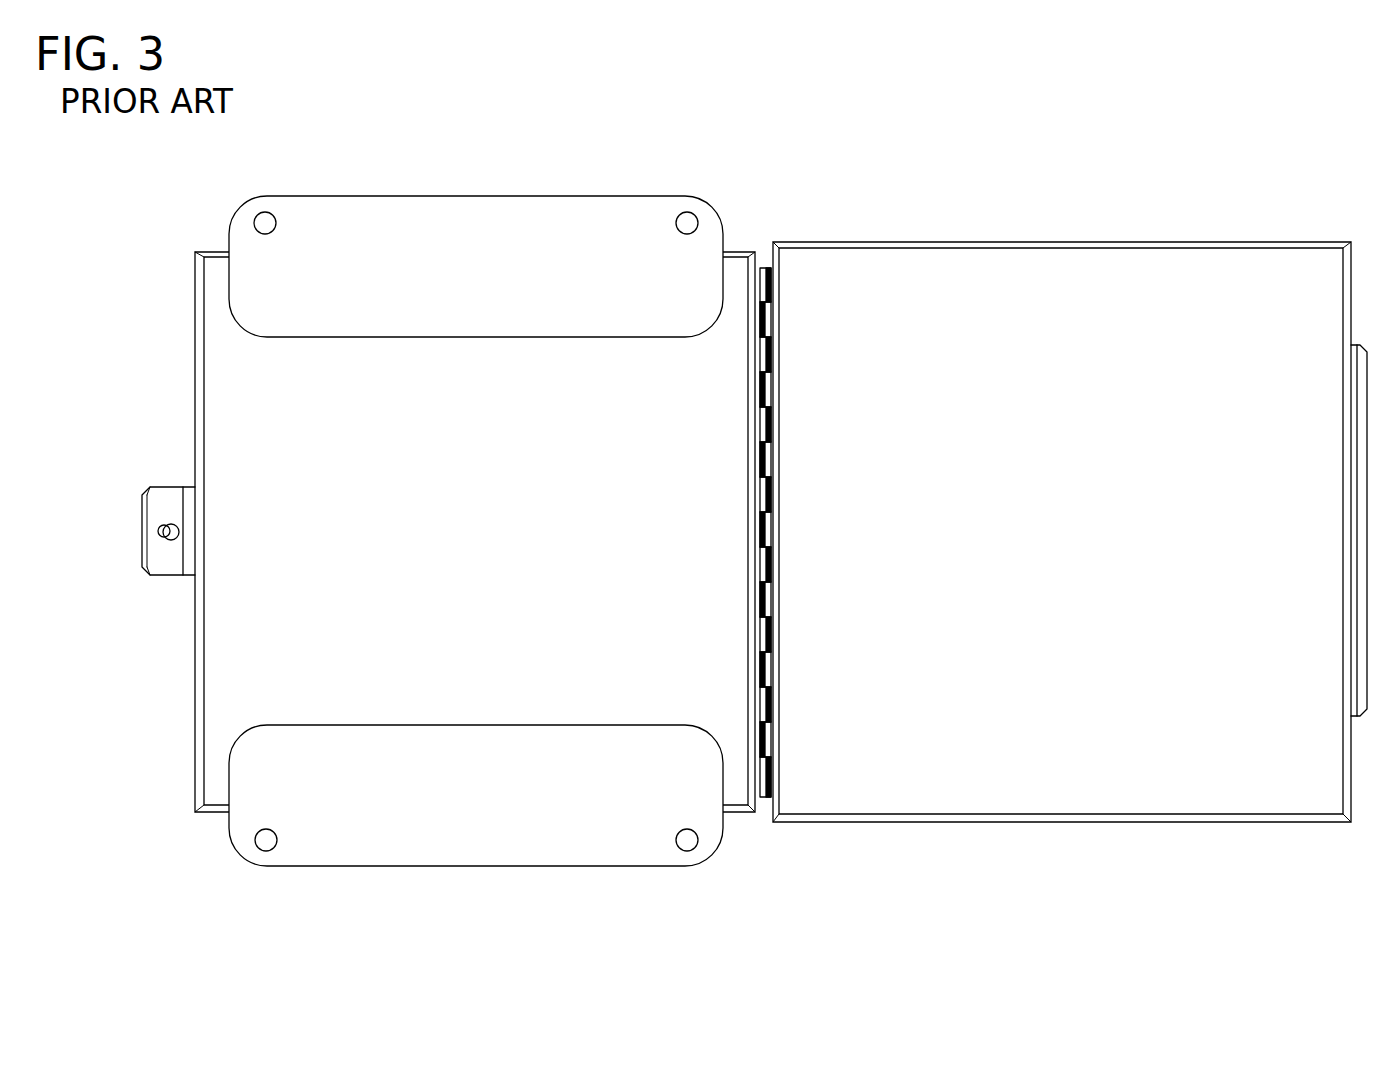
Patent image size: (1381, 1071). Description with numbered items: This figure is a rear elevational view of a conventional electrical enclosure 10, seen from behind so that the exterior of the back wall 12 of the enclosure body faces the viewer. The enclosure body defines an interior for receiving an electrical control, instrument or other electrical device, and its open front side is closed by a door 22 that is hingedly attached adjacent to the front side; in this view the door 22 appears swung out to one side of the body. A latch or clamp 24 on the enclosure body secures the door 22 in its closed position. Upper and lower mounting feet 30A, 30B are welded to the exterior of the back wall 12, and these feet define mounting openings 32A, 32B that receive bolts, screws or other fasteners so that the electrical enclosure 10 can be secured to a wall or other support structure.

The conventional electrical enclosure 10 is at (920, 163).
The back wall 12 is at (507, 537).
The door 22 is at (1167, 798).
The latch or clamp 24 is at (162, 572).
The upper mounting foot 30A is at (473, 196).
The lower mounting foot 30B is at (480, 866).
The mounting openings 32A is at (267, 212).
The mounting openings 32B is at (268, 851).